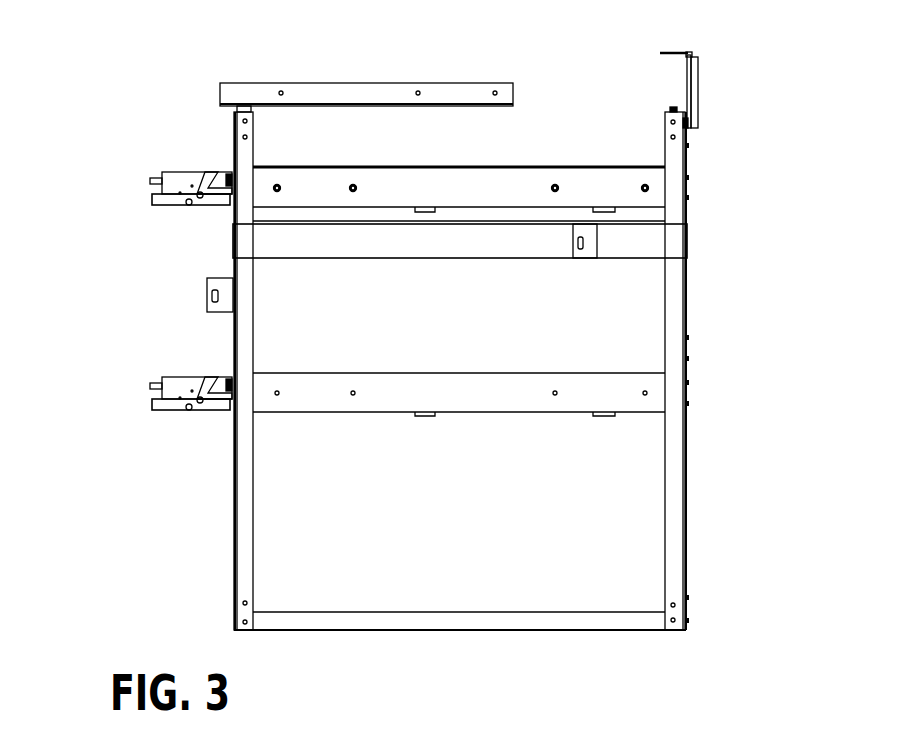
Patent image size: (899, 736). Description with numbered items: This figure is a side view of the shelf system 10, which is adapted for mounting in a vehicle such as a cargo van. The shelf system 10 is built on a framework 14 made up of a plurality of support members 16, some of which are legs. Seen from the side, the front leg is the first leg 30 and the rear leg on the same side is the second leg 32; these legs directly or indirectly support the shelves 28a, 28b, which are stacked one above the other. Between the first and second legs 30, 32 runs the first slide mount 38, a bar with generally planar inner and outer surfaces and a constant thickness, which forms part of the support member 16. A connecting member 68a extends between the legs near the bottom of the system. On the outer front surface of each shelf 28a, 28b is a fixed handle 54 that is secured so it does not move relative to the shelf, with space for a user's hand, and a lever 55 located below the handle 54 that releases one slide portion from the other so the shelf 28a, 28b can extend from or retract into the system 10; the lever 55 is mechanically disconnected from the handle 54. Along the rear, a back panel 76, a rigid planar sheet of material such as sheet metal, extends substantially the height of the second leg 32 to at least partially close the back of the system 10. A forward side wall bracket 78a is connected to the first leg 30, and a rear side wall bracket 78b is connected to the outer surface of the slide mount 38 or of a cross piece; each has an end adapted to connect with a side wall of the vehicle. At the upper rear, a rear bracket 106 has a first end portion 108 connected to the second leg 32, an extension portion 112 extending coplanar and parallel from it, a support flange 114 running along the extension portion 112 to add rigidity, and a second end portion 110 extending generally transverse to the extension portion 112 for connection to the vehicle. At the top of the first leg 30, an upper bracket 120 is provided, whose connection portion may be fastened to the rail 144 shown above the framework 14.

The shelf system 10 is at (703, 333).
The framework 14 is at (232, 497).
The support members 16 is at (625, 250).
The shelf 28a is at (178, 172).
The shelf 28b is at (178, 377).
The first leg 30 is at (242, 535).
The second leg 32 is at (672, 533).
The first slide mount 38 is at (655, 178).
The fixed handle 54 is at (150, 181).
The lever 55 is at (172, 205).
The connecting member 68a is at (460, 620).
The back panel 76 is at (686, 497).
The forward side wall bracket 78a is at (207, 297).
The rear side wall bracket 78b is at (582, 260).
The rear bracket 106 is at (688, 57).
The first end portion 108 is at (688, 126).
The second end portion 110 is at (692, 56).
The extension portion 112 is at (690, 72).
The support flange 114 is at (699, 100).
The upper bracket 120 is at (233, 110).
The rail 144 is at (355, 88).